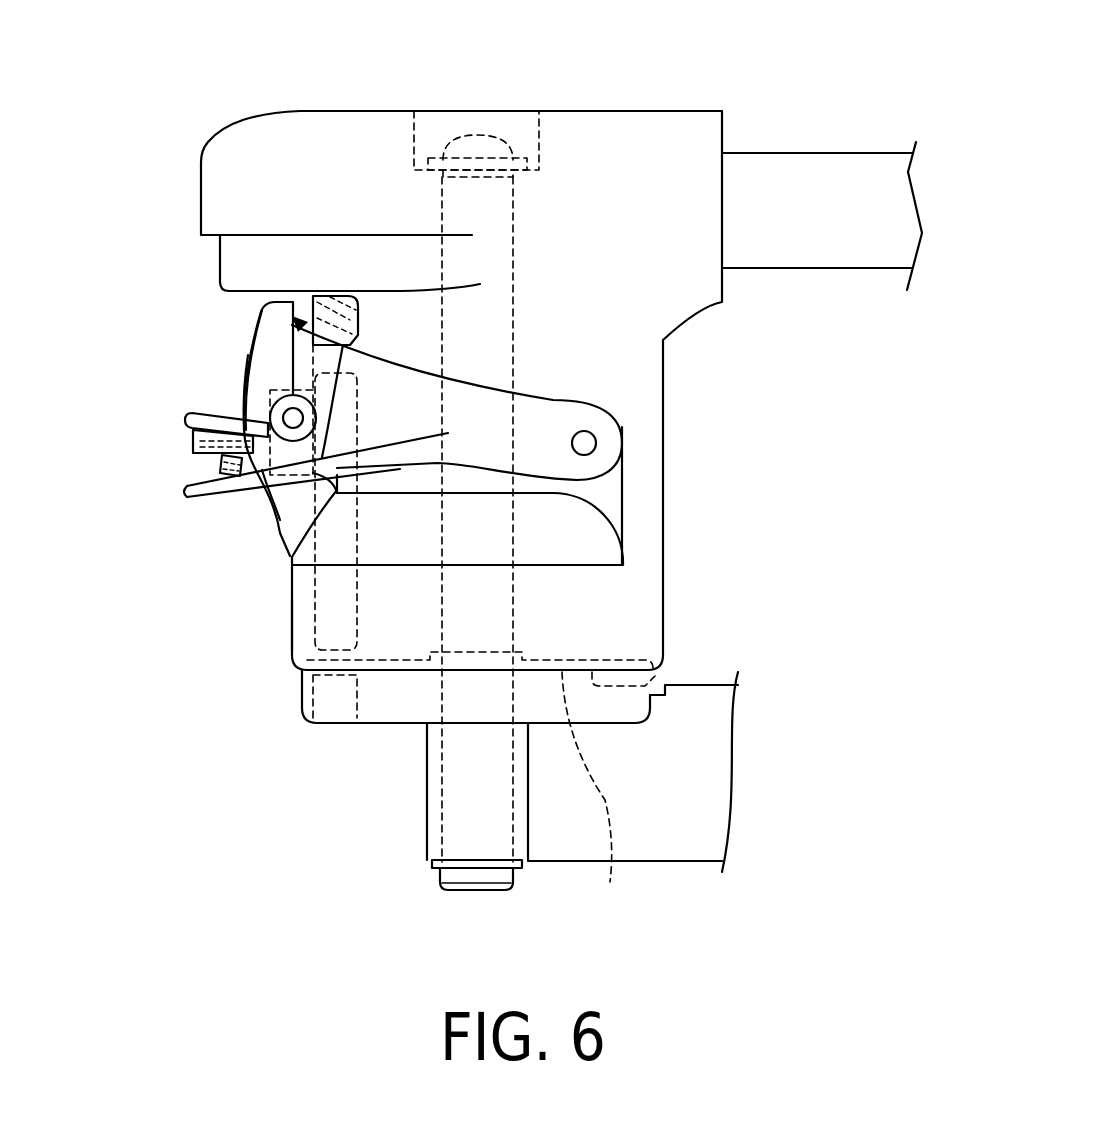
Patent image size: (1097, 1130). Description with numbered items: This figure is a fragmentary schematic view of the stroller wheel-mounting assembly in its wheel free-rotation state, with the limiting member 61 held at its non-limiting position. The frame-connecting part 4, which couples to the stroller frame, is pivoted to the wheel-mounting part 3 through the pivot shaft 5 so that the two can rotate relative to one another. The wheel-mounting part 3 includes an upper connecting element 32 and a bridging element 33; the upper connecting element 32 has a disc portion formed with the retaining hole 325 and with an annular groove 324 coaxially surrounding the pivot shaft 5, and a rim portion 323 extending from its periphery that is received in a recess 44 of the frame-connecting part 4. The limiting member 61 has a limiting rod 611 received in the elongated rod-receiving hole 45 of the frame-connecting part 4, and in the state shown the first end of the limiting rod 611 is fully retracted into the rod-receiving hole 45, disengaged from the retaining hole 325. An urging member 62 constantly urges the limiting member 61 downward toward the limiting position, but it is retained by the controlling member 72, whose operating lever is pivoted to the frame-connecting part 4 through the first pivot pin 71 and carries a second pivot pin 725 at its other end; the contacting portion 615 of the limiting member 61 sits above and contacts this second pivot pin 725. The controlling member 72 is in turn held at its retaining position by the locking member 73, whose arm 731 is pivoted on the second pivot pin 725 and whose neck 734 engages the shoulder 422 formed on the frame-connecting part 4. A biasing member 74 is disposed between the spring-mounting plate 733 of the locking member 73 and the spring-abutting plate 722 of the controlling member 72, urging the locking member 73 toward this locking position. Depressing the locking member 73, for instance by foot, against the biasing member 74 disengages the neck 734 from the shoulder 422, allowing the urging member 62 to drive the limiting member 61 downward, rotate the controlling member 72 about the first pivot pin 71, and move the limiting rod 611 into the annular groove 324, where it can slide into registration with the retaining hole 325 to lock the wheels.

The wheel-mounting part 3 is at (430, 802).
The frame-connecting part 4 is at (652, 100).
The pivot shaft 5 is at (520, 590).
The upper connecting element 32 is at (435, 832).
The bridging element 33 is at (702, 766).
The recess 44 is at (610, 660).
The rod-receiving hole 45 is at (330, 592).
The limiting member 61 is at (382, 522).
The urging member 62 is at (340, 298).
The first pivot pin 71 is at (586, 443).
The controlling member 72 is at (560, 390).
The locking member 73 is at (232, 318).
The biasing member 74 is at (235, 455).
The rim portion 323 is at (600, 803).
The annular groove 324 is at (658, 700).
The retaining hole 325 is at (305, 705).
The shoulder 422 is at (262, 358).
The limiting rod 611 is at (300, 620).
The contacting portion 615 is at (260, 495).
The spring-abutting plate 722 is at (183, 488).
The second pivot pin 725 is at (290, 556).
The arm 731 is at (272, 337).
The spring-mounting plate 733 is at (198, 413).
The neck 734 is at (296, 322).